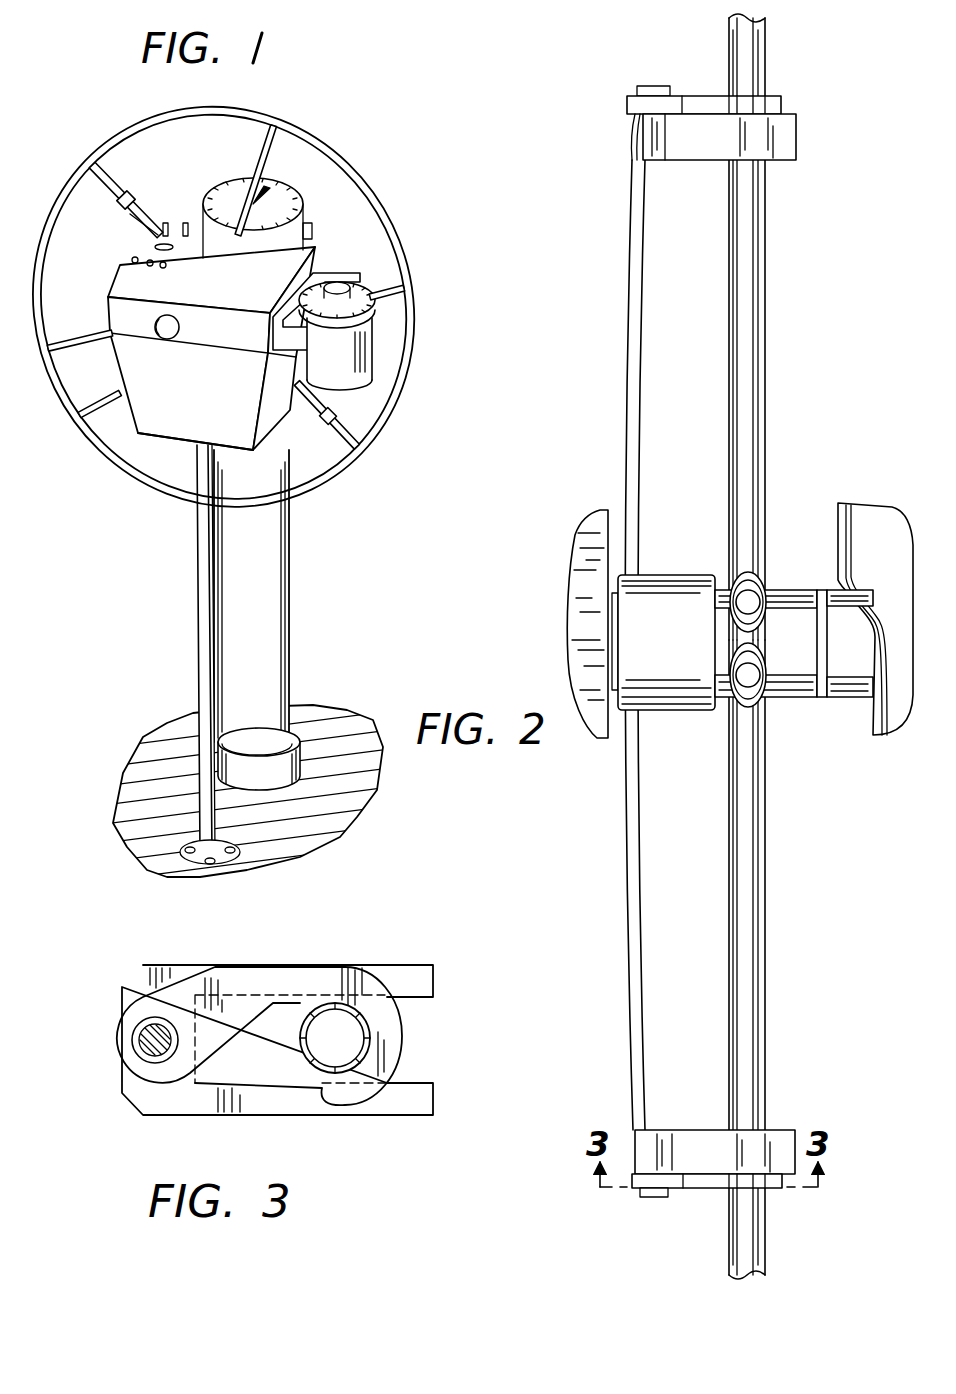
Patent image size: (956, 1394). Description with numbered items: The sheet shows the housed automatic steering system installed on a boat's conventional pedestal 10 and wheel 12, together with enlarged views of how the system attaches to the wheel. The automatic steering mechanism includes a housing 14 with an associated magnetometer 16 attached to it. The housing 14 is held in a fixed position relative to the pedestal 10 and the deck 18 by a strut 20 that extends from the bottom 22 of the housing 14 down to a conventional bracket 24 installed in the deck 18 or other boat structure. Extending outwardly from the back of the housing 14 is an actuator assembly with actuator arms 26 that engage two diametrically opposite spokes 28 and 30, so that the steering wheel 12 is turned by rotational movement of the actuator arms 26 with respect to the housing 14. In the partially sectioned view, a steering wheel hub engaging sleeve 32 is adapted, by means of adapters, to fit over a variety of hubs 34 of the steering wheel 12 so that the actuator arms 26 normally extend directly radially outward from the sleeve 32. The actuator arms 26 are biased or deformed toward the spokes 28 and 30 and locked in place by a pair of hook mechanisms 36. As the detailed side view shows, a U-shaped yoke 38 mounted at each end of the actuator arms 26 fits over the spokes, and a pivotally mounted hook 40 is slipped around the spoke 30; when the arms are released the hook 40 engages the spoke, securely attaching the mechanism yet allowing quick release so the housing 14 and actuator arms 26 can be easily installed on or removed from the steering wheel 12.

In FIG. 1, the pedestal 10 is at (291, 588).
In FIG. 1, the wheel 12 is at (404, 263).
In FIG. 1, the housing 14 is at (120, 377).
In FIG. 2, the housing 14 is at (598, 514).
In FIG. 1, the magnetometer 16 is at (373, 335).
In FIG. 1, the deck 18 is at (336, 709).
In FIG. 1, the strut 20 is at (199, 615).
In FIG. 1, the bottom 22 is at (175, 444).
In FIG. 1, the bracket 24 is at (224, 858).
In FIG. 1, the actuator arms 26 is at (134, 230).
In FIG. 2, the actuator arms 26 is at (642, 338).
In FIG. 1, the spoke 28 is at (118, 190).
In FIG. 2, the spoke 28 is at (756, 279).
In FIG. 1, the spoke 30 is at (341, 434).
In FIG. 2, the spoke 30 is at (766, 1000).
In FIG. 3, the spoke 30 is at (300, 1043).
In FIG. 2, the steering wheel hub engaging sleeve 32 is at (678, 577).
In FIG. 2, the hub 34 is at (796, 597).
In FIG. 2, the hook mechanism 36 is at (688, 90).
In FIG. 3, the U-shaped yoke 38 is at (413, 965).
In FIG. 3, the hook 40 is at (399, 1040).